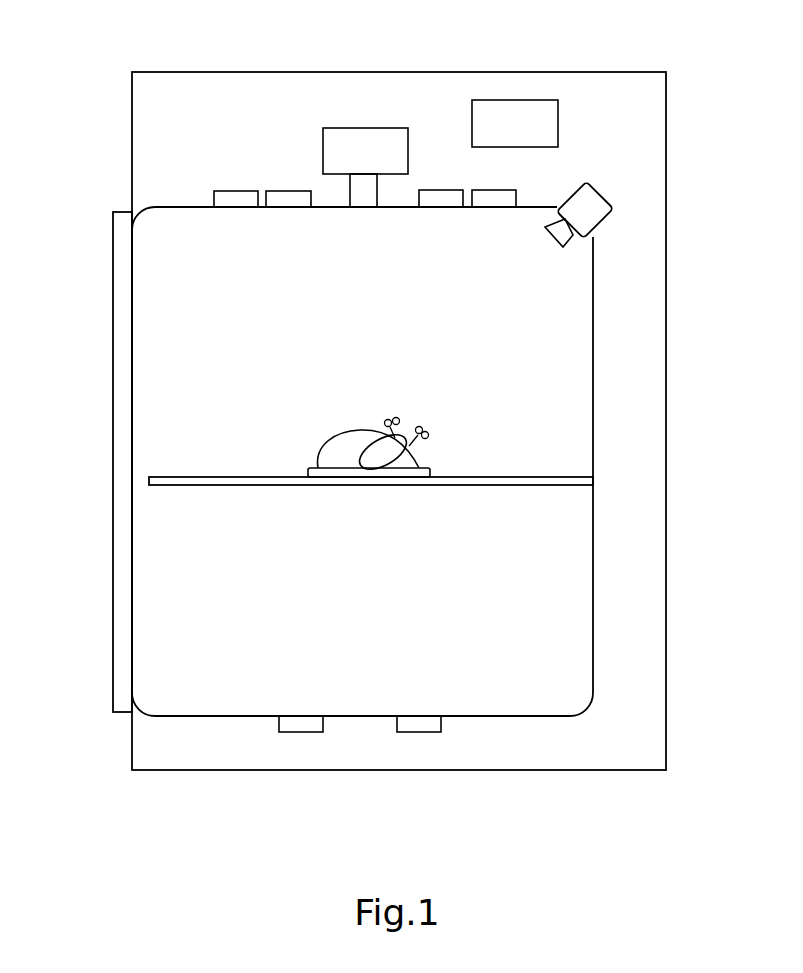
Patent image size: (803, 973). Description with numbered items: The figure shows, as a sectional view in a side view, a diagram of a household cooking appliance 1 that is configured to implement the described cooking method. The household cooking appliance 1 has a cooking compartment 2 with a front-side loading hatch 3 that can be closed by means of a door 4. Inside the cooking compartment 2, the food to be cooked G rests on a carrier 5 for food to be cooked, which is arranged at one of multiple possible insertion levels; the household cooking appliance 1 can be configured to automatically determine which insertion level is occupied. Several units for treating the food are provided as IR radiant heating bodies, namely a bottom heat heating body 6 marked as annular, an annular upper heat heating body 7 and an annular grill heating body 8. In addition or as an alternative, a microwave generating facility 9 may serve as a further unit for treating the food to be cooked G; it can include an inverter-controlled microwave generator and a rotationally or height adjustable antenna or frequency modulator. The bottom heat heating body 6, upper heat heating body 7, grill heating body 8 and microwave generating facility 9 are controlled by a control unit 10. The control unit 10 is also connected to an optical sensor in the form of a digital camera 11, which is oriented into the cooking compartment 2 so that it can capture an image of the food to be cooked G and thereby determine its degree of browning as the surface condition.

The household cooking appliance 1 is at (232, 72).
The cooking compartment 2 is at (153, 313).
The front-side loading hatch 3 is at (158, 375).
The door 4 is at (113, 423).
The carrier for food to be cooked 5 is at (233, 487).
The bottom heat heating body 6 is at (300, 733).
The upper heat heating body 7 is at (292, 190).
The grill heating body 8 is at (240, 190).
The microwave generating facility 9 is at (365, 128).
The control unit 10 is at (508, 100).
The digital camera 11 is at (613, 210).
The food to be cooked G is at (360, 430).